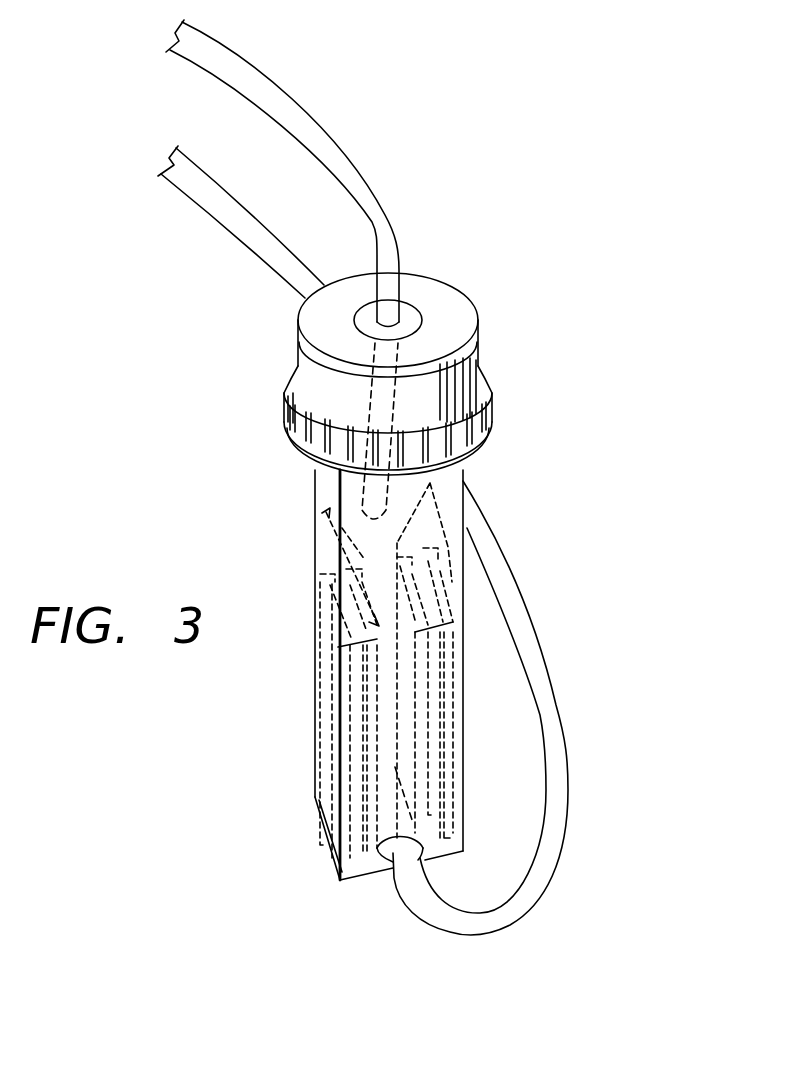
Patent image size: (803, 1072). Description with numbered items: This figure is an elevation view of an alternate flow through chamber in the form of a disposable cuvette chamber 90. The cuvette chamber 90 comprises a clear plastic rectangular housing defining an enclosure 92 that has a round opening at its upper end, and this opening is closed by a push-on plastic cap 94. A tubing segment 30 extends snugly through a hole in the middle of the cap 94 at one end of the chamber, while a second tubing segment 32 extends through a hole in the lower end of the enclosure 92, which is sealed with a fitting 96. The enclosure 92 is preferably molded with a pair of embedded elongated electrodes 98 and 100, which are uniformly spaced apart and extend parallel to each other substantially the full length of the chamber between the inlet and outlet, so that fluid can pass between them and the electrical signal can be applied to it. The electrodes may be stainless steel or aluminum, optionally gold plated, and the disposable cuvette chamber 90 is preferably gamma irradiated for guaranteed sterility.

The tubing segment 30 is at (317, 126).
The tubing segment 32 is at (228, 228).
The disposable cuvette chamber 90 is at (292, 563).
The enclosure 92 is at (327, 488).
The push-on plastic cap 94 is at (478, 342).
The fitting 96 is at (387, 858).
The embedded elongated electrode 98 is at (355, 692).
The embedded elongated electrode 100 is at (432, 758).